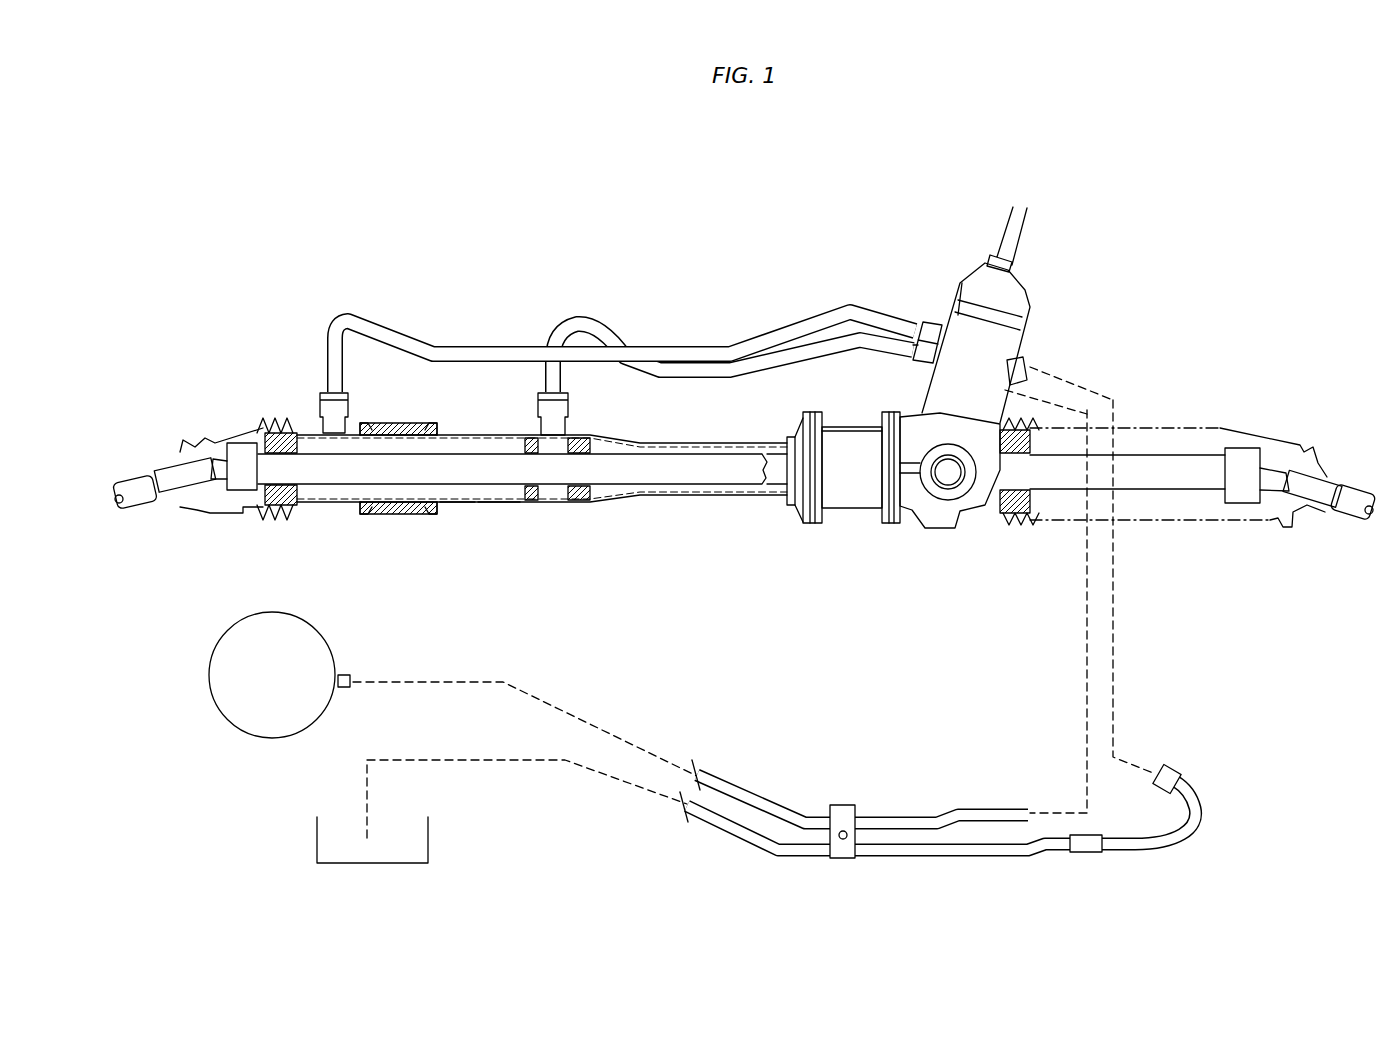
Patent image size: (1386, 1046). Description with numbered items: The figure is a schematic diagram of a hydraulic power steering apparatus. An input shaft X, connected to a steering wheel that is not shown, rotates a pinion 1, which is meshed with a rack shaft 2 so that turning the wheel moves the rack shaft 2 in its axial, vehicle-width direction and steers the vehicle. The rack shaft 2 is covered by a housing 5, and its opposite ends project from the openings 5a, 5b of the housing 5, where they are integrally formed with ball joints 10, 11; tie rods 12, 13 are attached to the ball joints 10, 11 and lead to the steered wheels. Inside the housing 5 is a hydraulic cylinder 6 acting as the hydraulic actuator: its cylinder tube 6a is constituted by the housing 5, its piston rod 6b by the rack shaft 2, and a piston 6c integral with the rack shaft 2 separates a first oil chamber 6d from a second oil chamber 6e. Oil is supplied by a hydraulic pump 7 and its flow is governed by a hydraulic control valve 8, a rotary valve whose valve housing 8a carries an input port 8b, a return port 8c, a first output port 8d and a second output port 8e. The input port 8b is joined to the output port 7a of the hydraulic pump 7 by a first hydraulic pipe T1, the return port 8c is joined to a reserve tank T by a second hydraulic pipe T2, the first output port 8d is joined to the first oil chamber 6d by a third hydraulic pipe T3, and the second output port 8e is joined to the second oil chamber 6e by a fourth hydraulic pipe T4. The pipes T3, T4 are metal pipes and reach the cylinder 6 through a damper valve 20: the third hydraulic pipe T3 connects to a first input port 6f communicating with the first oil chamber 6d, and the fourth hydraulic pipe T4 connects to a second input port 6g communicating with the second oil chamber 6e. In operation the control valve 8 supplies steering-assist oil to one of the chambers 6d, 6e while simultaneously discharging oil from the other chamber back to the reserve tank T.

The pinion 1 is at (940, 493).
The rack shaft 2 is at (710, 470).
The housing 5 is at (858, 488).
The opening 5a is at (250, 428).
The opening 5b is at (1038, 447).
The hydraulic cylinder 6 is at (497, 452).
The cylinder tube 6a is at (450, 440).
The piston rod 6b is at (458, 477).
The piston 6c is at (527, 503).
The first oil chamber 6d is at (490, 487).
The second oil chamber 6e is at (557, 492).
The first input port 6f is at (333, 433).
The second input port 6g is at (557, 457).
The hydraulic pump 7 is at (223, 690).
The output port 7a is at (345, 672).
The hydraulic control valve 8 is at (971, 266).
The valve housing 8a is at (962, 283).
The input port 8b is at (1033, 390).
The return port 8c is at (1023, 367).
The first output port 8d is at (942, 327).
The second output port 8e is at (917, 343).
The ball joint 10 is at (243, 478).
The ball joint 11 is at (1243, 487).
The tie rod 12 is at (147, 500).
The tie rod 13 is at (1350, 515).
The damper valve 20 is at (320, 408).
The reserve tank T is at (428, 845).
The first hydraulic pipe T1 is at (757, 772).
The second hydraulic pipe T2 is at (733, 843).
The third hydraulic pipe T3 is at (747, 347).
The fourth hydraulic pipe T4 is at (577, 327).
The input shaft X is at (1010, 237).